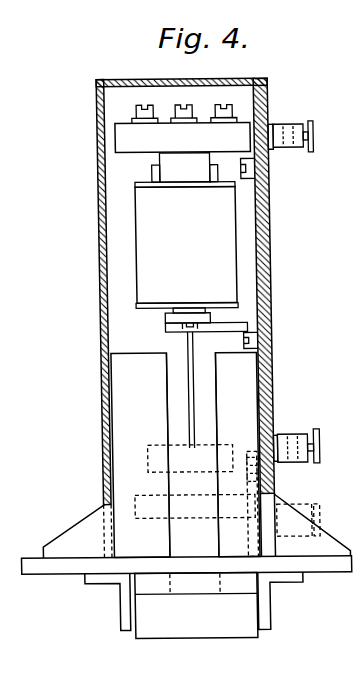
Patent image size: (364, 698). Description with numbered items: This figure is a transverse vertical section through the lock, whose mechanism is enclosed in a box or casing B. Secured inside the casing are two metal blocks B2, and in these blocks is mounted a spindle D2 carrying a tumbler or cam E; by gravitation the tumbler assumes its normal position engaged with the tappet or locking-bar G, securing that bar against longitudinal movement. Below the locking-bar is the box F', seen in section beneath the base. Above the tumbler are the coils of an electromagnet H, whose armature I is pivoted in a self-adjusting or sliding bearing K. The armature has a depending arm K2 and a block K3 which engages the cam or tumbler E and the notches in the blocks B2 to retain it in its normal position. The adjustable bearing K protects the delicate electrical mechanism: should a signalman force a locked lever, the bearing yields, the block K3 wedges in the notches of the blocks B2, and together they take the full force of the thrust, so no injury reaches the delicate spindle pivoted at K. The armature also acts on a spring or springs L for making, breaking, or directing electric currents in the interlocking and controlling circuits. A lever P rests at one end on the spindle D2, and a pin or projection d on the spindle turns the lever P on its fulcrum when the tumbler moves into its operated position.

The box or casing B is at (271, 218).
The metal blocks B2 is at (185, 454).
The spindle D2 is at (146, 499).
The pin or projection d is at (253, 488).
The tumbler or cam E is at (192, 455).
The box F' is at (196, 605).
The tappet or locking-bar G is at (196, 584).
The coils of an electromagnet H is at (186, 248).
The armature I is at (188, 172).
The self-adjusting or sliding bearing K is at (150, 182).
The depending arm K2 is at (190, 353).
The block K3 is at (190, 459).
The spring or springs L is at (216, 115).
The lever P is at (247, 450).